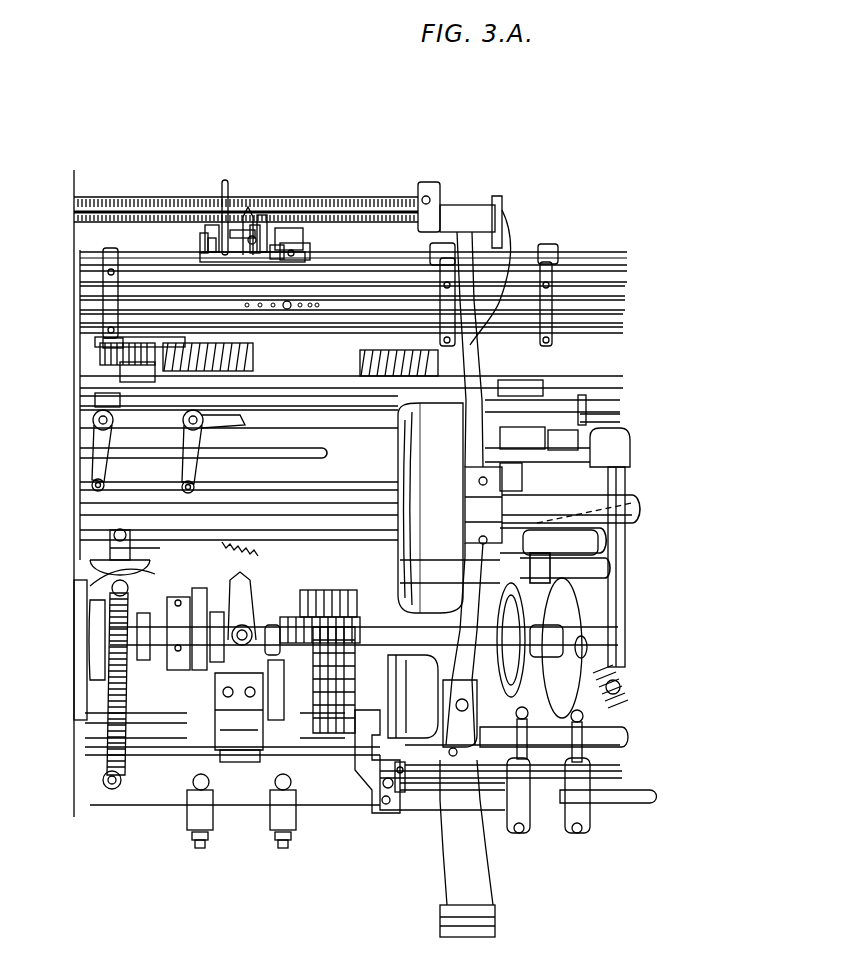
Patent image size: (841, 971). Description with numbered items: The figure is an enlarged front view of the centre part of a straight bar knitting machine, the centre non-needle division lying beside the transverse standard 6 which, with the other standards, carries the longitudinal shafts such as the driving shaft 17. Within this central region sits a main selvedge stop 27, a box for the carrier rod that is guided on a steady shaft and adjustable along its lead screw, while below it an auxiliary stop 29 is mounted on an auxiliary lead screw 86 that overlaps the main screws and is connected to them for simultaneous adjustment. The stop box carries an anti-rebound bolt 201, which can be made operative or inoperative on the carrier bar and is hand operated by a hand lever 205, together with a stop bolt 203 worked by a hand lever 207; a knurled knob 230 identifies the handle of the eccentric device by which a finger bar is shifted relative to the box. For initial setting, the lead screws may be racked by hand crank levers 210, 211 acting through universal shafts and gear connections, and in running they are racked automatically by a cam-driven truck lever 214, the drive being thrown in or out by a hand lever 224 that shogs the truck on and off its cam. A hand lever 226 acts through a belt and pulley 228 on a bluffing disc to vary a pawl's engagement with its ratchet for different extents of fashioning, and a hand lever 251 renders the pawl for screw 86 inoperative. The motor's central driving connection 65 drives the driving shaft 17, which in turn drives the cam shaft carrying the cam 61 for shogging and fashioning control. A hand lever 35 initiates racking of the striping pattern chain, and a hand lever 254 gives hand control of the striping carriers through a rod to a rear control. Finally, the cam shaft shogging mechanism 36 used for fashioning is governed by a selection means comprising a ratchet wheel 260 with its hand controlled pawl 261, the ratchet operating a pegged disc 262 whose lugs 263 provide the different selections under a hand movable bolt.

The transverse standard 6 is at (465, 193).
The driving shaft 17 is at (630, 520).
The main selvedge stop 27 is at (212, 237).
The auxiliary stop 29 is at (262, 375).
The hand lever 35 is at (613, 790).
The cam shaft shogging mechanism 36 is at (284, 682).
The cam 61 is at (237, 662).
The central driving connection 65 is at (632, 500).
The auxiliary lead screw 86 is at (210, 372).
The anti-rebound bolt 201 is at (207, 238).
The stop bolt 203 is at (278, 257).
The hand lever 205 is at (226, 186).
The hand lever 207 is at (256, 233).
The hand crank lever 210 is at (100, 488).
The hand crank lever 211 is at (188, 490).
The truck lever 214 is at (118, 655).
The hand lever 224 is at (127, 517).
The hand lever 226 is at (425, 199).
The belt and pulley 228 is at (500, 222).
The knurled knob 230 is at (287, 302).
The hand lever 251 is at (122, 325).
The hand lever 254 is at (590, 733).
The ratchet wheel 260 is at (347, 723).
The hand controlled pawl 261 is at (305, 578).
The pegged disc 262 is at (400, 795).
The lug 263 is at (395, 687).